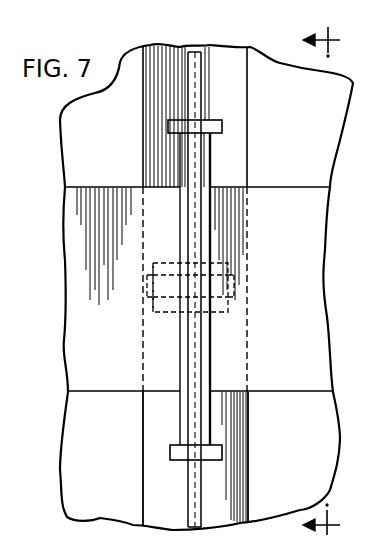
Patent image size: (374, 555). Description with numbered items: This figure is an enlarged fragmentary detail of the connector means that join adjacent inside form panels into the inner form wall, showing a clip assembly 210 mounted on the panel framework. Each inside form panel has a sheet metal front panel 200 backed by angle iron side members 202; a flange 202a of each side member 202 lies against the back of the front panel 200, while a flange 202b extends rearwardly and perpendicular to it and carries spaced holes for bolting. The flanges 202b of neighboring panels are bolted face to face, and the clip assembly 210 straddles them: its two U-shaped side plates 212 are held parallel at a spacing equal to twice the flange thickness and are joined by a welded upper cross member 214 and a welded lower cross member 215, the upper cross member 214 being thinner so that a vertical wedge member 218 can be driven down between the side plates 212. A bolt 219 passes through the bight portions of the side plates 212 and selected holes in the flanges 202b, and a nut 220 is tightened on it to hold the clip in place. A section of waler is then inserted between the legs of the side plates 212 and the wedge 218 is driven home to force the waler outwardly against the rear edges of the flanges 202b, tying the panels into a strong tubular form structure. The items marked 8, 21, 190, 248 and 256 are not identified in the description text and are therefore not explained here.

The section line 8- 8 is at (321, 270).
The housing 21 is at (308, 215).
The base plate 190 is at (78, 494).
The front panel 200 is at (114, 172).
The side member 202 is at (155, 88).
The side member flange 202a is at (143, 484).
The side member flange 202b is at (190, 486).
The clip assembly 210 is at (181, 412).
The side plate 212 is at (208, 162).
The upper cross member 214 is at (222, 126).
The lower cross member 215 is at (208, 453).
The wedge member 218 is at (198, 62).
The bolt 219 is at (242, 278).
The nut 220 is at (165, 312).
The element 248 is at (244, 550).
The element 256 is at (167, 550).